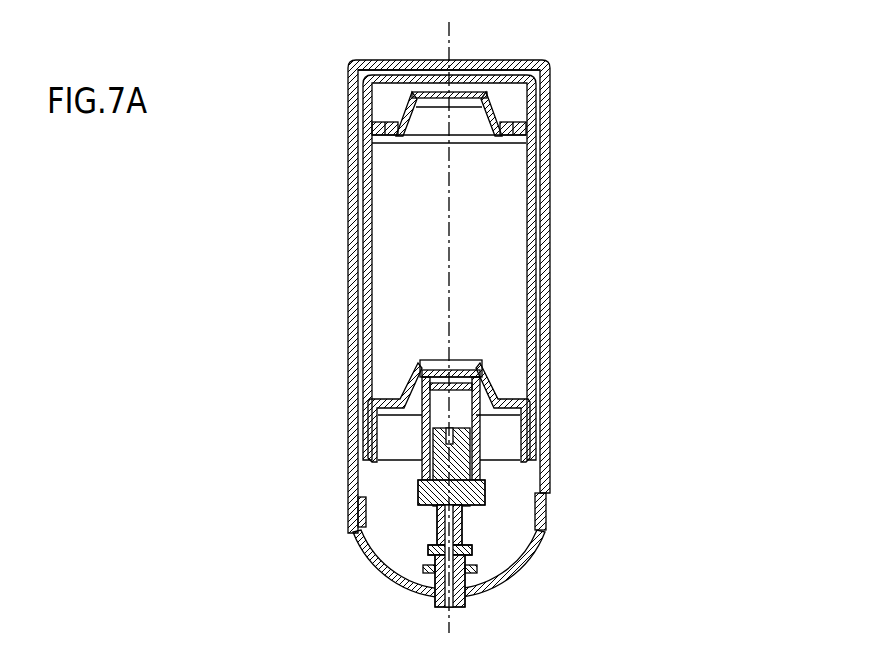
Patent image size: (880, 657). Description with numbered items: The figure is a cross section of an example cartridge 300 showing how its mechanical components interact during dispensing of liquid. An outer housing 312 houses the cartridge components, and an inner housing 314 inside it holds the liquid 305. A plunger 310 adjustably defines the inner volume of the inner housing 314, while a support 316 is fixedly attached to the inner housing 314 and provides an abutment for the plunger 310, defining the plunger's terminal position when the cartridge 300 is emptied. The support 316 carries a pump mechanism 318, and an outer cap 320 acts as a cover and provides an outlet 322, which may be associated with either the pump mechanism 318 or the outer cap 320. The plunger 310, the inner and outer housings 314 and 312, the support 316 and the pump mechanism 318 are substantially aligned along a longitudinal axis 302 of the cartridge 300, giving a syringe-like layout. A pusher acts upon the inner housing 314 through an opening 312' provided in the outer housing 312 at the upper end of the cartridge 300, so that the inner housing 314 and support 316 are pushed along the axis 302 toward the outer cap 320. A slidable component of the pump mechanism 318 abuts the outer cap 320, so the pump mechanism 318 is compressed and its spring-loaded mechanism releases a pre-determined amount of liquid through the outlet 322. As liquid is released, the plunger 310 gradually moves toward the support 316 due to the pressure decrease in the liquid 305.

The cartridge 300 is at (697, 58).
The longitudinal axis 302 is at (442, 31).
The liquid 305 is at (415, 193).
The plunger 310 is at (495, 100).
The outer housing 312 is at (503, 296).
The opening 312' is at (460, 35).
The inner housing 314 is at (366, 294).
The support 316 is at (505, 372).
The pump mechanism 318 is at (432, 443).
The outer cap 320 is at (380, 574).
The outlet 322 is at (460, 606).